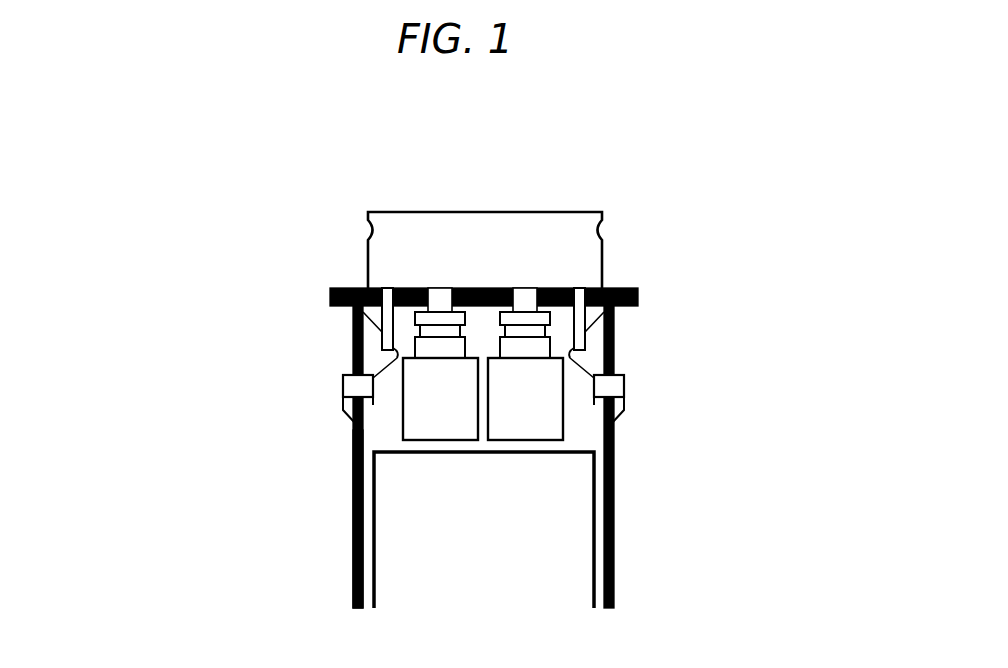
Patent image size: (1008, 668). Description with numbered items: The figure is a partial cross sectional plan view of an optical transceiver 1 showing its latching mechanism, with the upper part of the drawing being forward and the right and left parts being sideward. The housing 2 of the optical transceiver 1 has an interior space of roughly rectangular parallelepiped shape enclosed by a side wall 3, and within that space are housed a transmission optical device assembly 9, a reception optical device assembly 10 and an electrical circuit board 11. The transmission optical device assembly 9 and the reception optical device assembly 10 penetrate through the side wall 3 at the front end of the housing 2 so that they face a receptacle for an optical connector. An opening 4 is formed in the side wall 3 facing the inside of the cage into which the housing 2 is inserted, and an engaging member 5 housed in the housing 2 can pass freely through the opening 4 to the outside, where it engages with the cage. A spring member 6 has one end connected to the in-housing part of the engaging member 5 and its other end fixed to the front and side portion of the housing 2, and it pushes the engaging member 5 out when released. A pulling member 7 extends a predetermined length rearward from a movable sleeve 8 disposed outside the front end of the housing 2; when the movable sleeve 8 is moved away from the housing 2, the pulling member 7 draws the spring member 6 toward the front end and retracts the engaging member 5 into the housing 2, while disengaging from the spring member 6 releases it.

The optical transceiver 1 is at (285, 235).
The housing 2 is at (353, 577).
The side wall 3 is at (353, 523).
The opening 4 is at (335, 425).
The engaging member 5 is at (343, 382).
The spring member 6 is at (355, 352).
The pulling member 7 is at (355, 330).
The movable sleeve 8 is at (405, 212).
The transmission optical device assembly 9 is at (563, 417).
The reception optical device assembly 10 is at (481, 415).
The electrical circuit board 11 is at (567, 550).